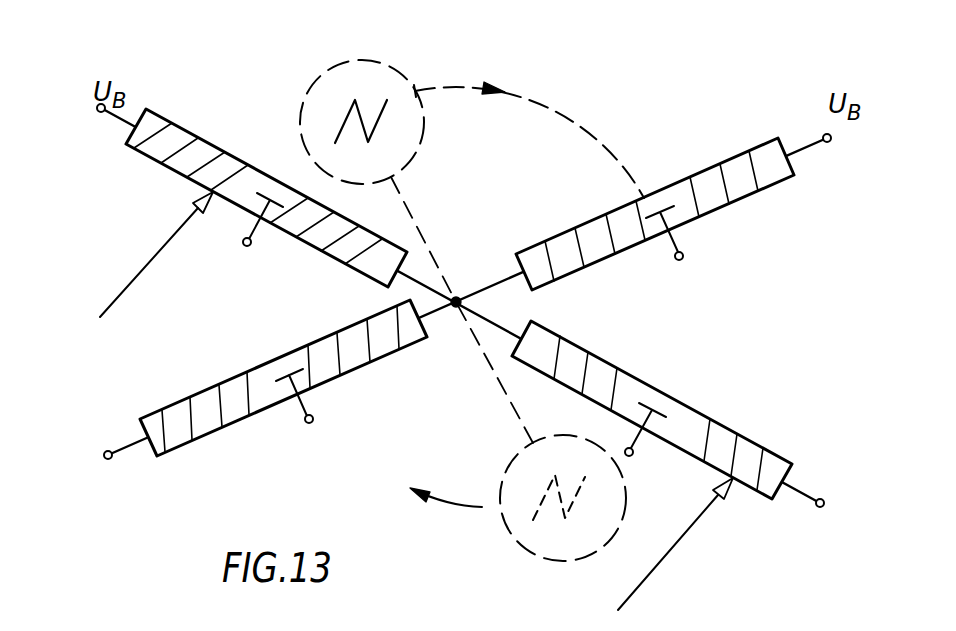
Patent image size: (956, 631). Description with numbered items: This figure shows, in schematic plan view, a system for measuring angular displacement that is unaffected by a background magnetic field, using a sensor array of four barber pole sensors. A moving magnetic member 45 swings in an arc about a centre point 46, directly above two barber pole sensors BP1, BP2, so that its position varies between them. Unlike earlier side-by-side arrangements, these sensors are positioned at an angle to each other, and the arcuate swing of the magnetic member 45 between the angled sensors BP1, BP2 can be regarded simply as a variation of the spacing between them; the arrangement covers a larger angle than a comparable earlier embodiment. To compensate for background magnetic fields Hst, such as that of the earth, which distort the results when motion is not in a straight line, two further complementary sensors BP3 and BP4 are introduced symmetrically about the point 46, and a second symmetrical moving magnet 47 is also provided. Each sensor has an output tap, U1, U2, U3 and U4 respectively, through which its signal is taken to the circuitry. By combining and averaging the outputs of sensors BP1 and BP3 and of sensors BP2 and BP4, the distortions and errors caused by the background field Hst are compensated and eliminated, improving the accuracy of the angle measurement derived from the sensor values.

The moving magnetic member 45 is at (377, 60).
The centre point 46 is at (463, 296).
The second symmetrical moving magnet 47 is at (516, 545).
The barber pole sensor BP1 is at (196, 133).
The barber pole sensor BP2 is at (735, 173).
The complementary barber pole sensor BP3 is at (758, 467).
The complementary barber pole sensor BP4 is at (177, 420).
The sensor output voltage U1 is at (259, 239).
The sensor output voltage U2 is at (686, 245).
The sensor output voltage U3 is at (650, 449).
The sensor output voltage U4 is at (315, 412).
The background magnetic field Hst is at (416, 401).